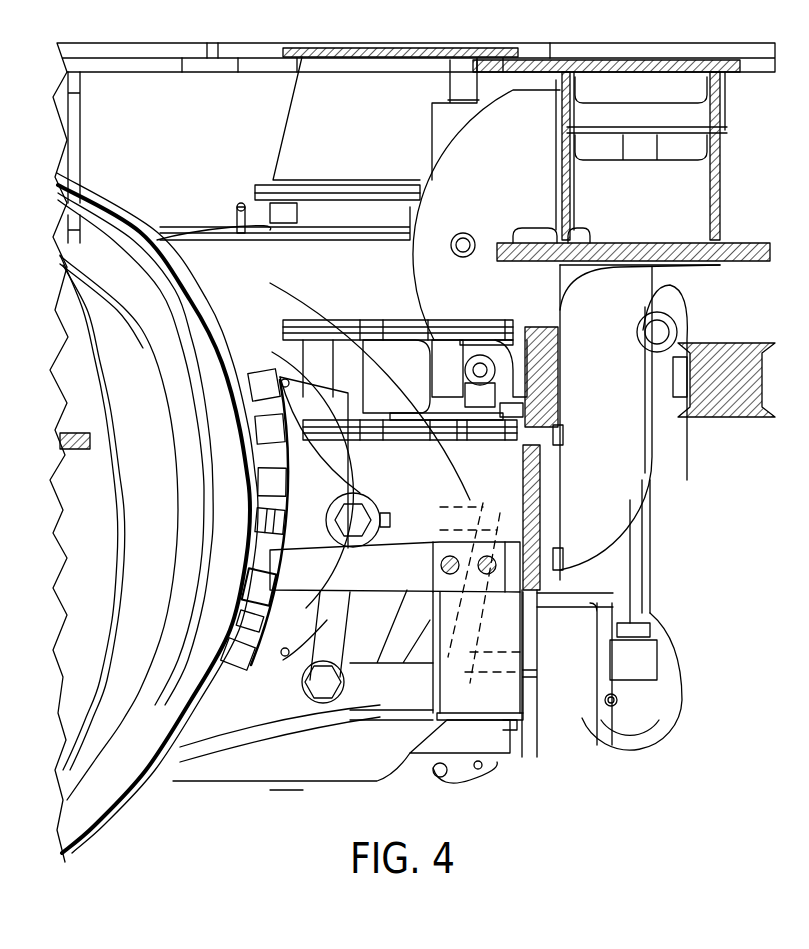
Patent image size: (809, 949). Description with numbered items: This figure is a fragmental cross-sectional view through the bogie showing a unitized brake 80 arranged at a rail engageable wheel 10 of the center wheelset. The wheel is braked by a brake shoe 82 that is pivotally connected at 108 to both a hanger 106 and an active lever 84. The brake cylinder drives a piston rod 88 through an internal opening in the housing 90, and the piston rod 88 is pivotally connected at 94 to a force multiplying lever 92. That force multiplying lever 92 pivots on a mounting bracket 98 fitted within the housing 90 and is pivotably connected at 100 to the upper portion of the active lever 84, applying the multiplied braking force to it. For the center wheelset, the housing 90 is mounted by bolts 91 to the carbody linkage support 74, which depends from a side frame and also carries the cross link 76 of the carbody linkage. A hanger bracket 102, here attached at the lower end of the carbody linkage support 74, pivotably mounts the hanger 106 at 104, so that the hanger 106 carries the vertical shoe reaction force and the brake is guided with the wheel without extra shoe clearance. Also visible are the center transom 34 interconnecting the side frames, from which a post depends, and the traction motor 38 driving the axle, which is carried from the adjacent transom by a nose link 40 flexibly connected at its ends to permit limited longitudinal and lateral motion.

The first rail engageable wheel 10 is at (119, 387).
The center transom 34 is at (722, 163).
The traction motor 38 is at (380, 775).
The nose link 40 is at (677, 661).
The carbody linkage support 74 is at (627, 497).
The cross link 76 is at (735, 343).
The unitized brake 80 is at (272, 663).
The brake shoe 82 is at (309, 645).
The active lever 84 is at (392, 498).
The piston rod 88 is at (500, 675).
The housing 90 is at (433, 722).
The bolts 91 is at (560, 440).
The force multiplying lever 92 is at (483, 602).
The pivotal connection of piston rod 94 is at (460, 658).
The mounting bracket 98 is at (512, 601).
The pivotable connection to active lever 100 is at (498, 530).
The hanger bracket 102 is at (392, 696).
The hanger pivot 104 is at (318, 703).
The hanger 106 is at (345, 647).
The brake shoe pivot 108 is at (333, 505).